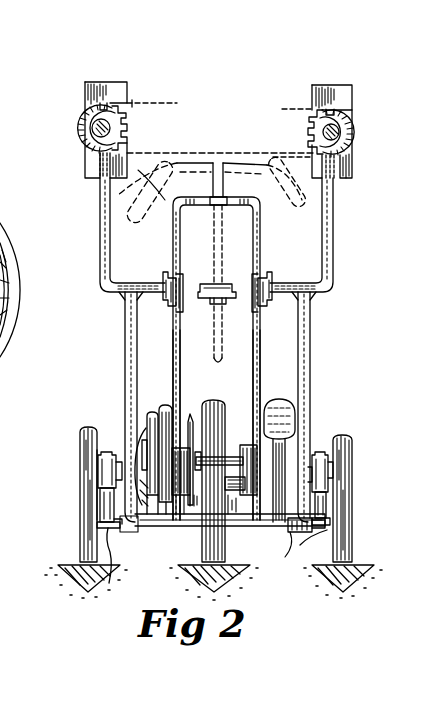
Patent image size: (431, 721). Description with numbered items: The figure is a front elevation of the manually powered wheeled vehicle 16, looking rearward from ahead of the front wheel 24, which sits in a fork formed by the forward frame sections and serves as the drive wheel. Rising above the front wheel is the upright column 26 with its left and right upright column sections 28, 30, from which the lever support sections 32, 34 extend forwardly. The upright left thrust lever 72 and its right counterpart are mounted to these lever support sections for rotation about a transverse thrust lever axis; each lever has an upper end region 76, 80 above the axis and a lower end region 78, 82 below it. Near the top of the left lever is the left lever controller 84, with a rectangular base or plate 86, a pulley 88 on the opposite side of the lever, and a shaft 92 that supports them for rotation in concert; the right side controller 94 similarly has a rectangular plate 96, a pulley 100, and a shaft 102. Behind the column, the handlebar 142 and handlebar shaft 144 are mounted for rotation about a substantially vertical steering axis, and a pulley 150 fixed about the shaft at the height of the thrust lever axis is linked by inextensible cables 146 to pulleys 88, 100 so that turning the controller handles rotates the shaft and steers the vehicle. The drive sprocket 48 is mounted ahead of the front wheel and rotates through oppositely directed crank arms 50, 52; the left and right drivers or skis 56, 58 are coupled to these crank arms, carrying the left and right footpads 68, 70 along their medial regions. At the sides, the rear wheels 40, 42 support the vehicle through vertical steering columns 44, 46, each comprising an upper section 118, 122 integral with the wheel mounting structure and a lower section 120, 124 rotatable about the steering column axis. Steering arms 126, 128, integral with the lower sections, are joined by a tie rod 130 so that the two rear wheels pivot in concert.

The manually powered wheeled vehicle 16 is at (150, 56).
The front wheel 24 is at (197, 563).
The upright column 26 is at (164, 224).
The left upright column section 28 is at (263, 355).
The right upright column section 30 is at (172, 350).
The lever support section 32 is at (262, 280).
The lever support section 34 is at (173, 267).
The rear wheel 40 is at (349, 541).
The rear wheel 42 is at (82, 517).
The vertical steering column 44 is at (321, 436).
The vertical steering column 46 is at (88, 470).
The drive sprocket 48 is at (193, 410).
The crank arm 50 is at (258, 523).
The crank arm 52 is at (163, 406).
The left driver or ski 56 is at (294, 527).
The right driver or ski 58 is at (147, 403).
The left footpad 68 is at (283, 399).
The right footpad 70 is at (143, 423).
The left thrust lever 72 is at (352, 207).
The upper end region 76 is at (338, 230).
The lower end region 78 is at (332, 352).
The upper end region 80 is at (100, 232).
The lower end region 82 is at (125, 375).
The left lever controller 84 is at (355, 76).
The rectangular base or plate 86 is at (327, 92).
The pulley 88 is at (308, 143).
The shaft 92 is at (328, 132).
The right side controller 94 is at (76, 86).
The rectangular plate 96 is at (110, 90).
The pulley 100 is at (127, 129).
The shaft 102 is at (140, 104).
The upper section 118 is at (340, 455).
The lower section 120 is at (330, 500).
The upper section 122 is at (100, 457).
The lower section 124 is at (100, 507).
The steering arm 126 is at (300, 545).
The steering arm 128 is at (110, 583).
The tie rod 130 is at (188, 527).
The handlebar 142 is at (209, 150).
The handlebar shaft 144 is at (223, 241).
The inextensible cables 146 is at (170, 102).
The pulley 150 is at (231, 284).